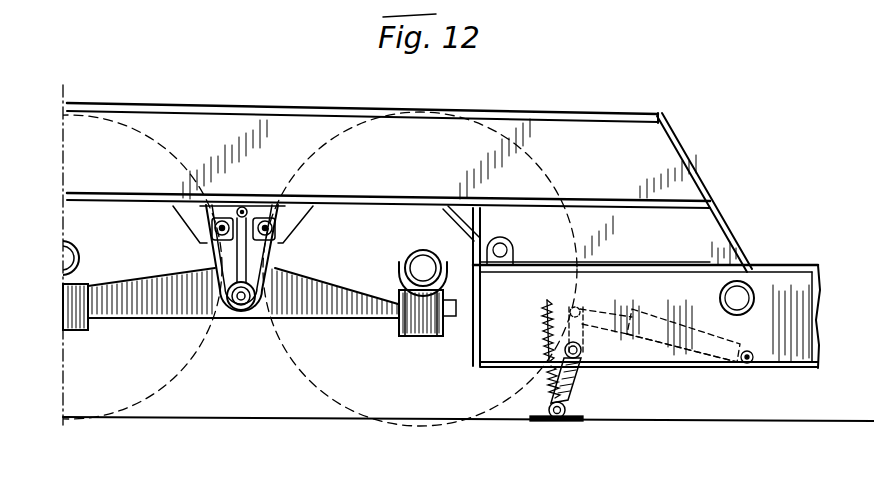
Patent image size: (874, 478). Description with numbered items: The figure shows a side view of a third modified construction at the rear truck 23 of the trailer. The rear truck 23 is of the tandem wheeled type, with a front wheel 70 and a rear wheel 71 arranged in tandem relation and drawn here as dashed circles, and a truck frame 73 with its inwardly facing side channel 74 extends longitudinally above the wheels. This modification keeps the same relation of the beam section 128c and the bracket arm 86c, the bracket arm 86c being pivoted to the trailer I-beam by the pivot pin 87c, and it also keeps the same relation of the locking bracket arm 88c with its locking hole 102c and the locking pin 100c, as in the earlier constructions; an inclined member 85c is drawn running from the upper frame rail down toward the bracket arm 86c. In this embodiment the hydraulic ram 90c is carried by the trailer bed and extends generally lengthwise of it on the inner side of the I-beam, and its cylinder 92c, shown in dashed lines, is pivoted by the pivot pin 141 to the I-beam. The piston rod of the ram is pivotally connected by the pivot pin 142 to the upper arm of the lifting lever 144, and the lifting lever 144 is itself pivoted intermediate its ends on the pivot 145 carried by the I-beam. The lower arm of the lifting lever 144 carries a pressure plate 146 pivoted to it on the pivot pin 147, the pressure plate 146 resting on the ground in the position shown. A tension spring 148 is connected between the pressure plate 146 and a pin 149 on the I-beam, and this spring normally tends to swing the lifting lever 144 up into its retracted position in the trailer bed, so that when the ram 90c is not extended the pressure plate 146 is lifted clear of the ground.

The rear truck 23 is at (178, 88).
The truck frame 73 is at (307, 108).
The side channel 74 is at (574, 128).
The front wheel 70 is at (323, 386).
The rear wheel 71 is at (152, 392).
The inclined brace member 85c is at (712, 193).
The beam section 128c is at (702, 236).
The bracket arm 86c is at (700, 292).
The locking bracket arm 88c is at (513, 257).
The locking pin 100c is at (507, 243).
The locking hole 102c is at (502, 258).
The pivot pin 87c is at (741, 300).
The cylinder 92c is at (716, 333).
The hydraulic ram 90c is at (667, 343).
The pivot pin 141 is at (752, 364).
The pivot pin 142 is at (580, 309).
The pin 149 is at (541, 303).
The tension spring 148 is at (541, 334).
The pivot 145 is at (579, 359).
The lifting lever 144 is at (569, 391).
The pivot pin 147 is at (551, 418).
The pressure plate 146 is at (566, 424).